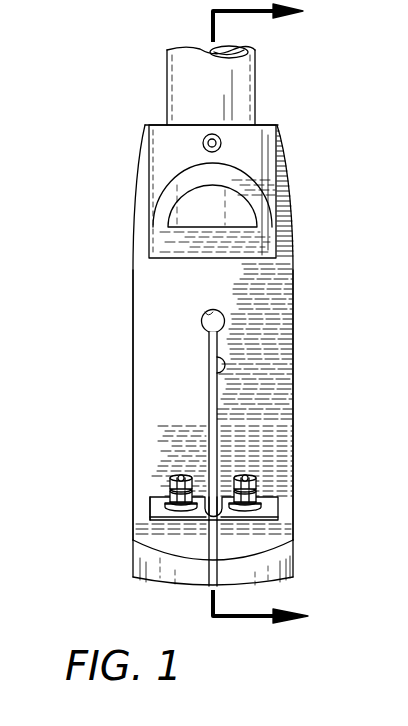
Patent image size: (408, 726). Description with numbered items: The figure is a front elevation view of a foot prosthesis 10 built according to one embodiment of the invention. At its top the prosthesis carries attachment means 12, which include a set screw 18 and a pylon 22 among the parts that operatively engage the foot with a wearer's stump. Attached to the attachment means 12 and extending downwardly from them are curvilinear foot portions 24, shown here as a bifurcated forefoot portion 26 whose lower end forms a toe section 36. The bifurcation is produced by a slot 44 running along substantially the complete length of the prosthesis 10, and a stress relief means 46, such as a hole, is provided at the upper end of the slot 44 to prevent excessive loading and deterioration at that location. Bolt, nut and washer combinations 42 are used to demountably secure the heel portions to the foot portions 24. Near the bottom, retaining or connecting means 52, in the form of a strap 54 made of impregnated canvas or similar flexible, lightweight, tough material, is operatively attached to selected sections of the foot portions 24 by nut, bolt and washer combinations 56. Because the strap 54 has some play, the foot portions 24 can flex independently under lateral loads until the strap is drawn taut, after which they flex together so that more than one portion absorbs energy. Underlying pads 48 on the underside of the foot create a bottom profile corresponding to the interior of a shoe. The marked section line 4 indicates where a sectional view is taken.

The section line 4- 4 is at (273, 315).
The foot prosthesis 10 is at (108, 336).
The attachment means 12 is at (297, 169).
The set screw 18 is at (206, 150).
The pylon 22 is at (258, 90).
The curvilinear foot portions 24 is at (125, 416).
The bifurcated forefoot portion 26 is at (294, 345).
The toe section 36 is at (165, 546).
The bolt, nut and washer combinations 42 is at (171, 477).
The slot 44 is at (209, 358).
The stress relief means 46 is at (203, 316).
The underlying pads 48 is at (195, 579).
The retaining or connecting means 52 is at (306, 509).
The strap 54 is at (150, 506).
The nut, bolt and washer combinations 56 is at (164, 498).